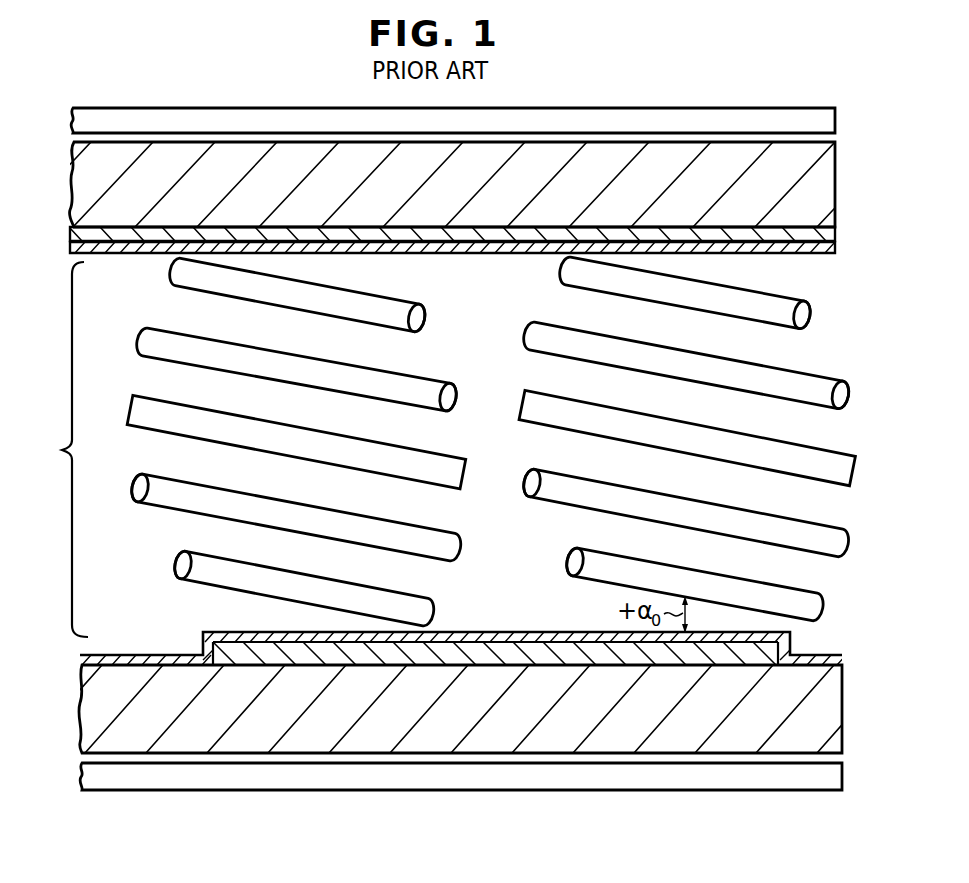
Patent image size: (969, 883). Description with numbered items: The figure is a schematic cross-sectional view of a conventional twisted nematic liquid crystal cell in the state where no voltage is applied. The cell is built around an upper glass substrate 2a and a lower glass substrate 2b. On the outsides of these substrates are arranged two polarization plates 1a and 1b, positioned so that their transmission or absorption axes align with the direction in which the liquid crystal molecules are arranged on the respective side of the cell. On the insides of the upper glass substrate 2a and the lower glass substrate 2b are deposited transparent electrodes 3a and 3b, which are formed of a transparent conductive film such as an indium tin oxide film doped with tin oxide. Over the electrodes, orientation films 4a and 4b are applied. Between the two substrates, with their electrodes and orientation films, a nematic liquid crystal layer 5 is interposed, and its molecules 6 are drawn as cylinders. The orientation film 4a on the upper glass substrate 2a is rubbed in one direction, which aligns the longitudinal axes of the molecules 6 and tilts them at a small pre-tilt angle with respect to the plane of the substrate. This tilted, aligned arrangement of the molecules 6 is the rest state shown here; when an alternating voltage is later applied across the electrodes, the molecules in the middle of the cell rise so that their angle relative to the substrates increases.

The polarization plate 1a is at (838, 119).
The upper glass substrate 2a is at (838, 189).
The transparent electrode 3a is at (838, 240).
The orientation film 4a is at (488, 254).
The nematic liquid crystal layer 5 is at (64, 449).
The molecules 6 is at (430, 394).
The transparent electrode 3b is at (228, 632).
The orientation film 4b is at (521, 600).
The lower glass substrate 2b is at (839, 726).
The polarization plate 1b is at (800, 786).